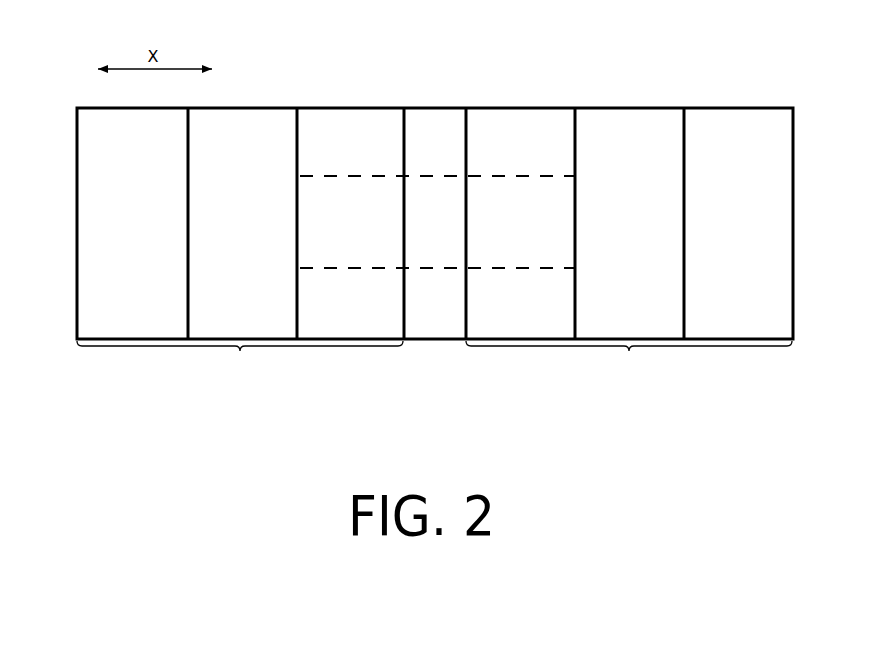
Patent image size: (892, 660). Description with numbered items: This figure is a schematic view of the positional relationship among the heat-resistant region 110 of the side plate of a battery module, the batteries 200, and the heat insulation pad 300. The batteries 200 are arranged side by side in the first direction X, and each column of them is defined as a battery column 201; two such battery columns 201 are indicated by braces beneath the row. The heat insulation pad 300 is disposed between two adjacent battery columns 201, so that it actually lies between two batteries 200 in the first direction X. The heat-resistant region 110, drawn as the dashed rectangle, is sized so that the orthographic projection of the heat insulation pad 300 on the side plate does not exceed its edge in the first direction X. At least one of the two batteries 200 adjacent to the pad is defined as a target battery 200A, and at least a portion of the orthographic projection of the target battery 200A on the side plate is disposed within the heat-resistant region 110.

The heat-resistant region 110 is at (380, 175).
The battery 200 is at (522, 141).
The target battery 200A is at (348, 141).
The heat insulation pad 300 is at (442, 128).
The battery column 201 is at (434, 356).